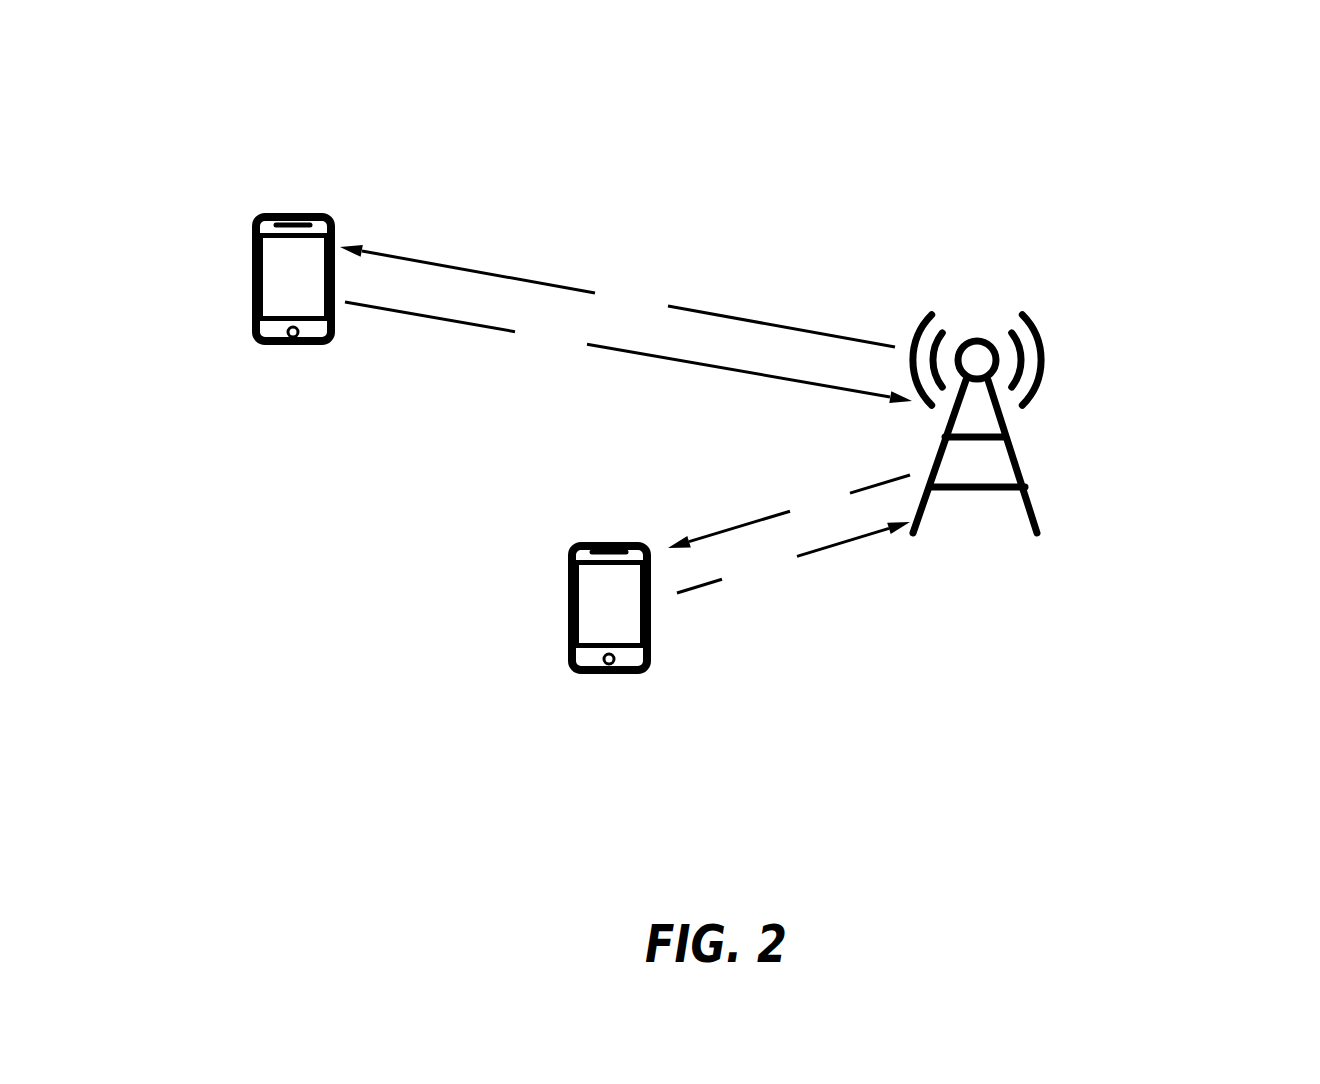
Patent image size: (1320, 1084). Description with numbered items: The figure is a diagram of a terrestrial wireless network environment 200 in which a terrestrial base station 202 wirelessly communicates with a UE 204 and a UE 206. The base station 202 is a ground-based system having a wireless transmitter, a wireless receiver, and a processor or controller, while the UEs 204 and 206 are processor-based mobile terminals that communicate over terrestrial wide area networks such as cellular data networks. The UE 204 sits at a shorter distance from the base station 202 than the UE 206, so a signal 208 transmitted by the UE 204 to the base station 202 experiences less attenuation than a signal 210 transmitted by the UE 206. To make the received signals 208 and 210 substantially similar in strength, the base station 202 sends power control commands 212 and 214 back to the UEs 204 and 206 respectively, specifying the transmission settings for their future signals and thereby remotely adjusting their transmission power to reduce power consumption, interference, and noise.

The terrestrial wireless network environment 200 is at (1290, 160).
The terrestrial base station 202 is at (1030, 438).
The UE 204 is at (568, 616).
The UE 206 is at (252, 272).
The signal 208 is at (793, 557).
The signal 210 is at (628, 352).
The power control command 212 is at (789, 511).
The power control command 214 is at (617, 296).